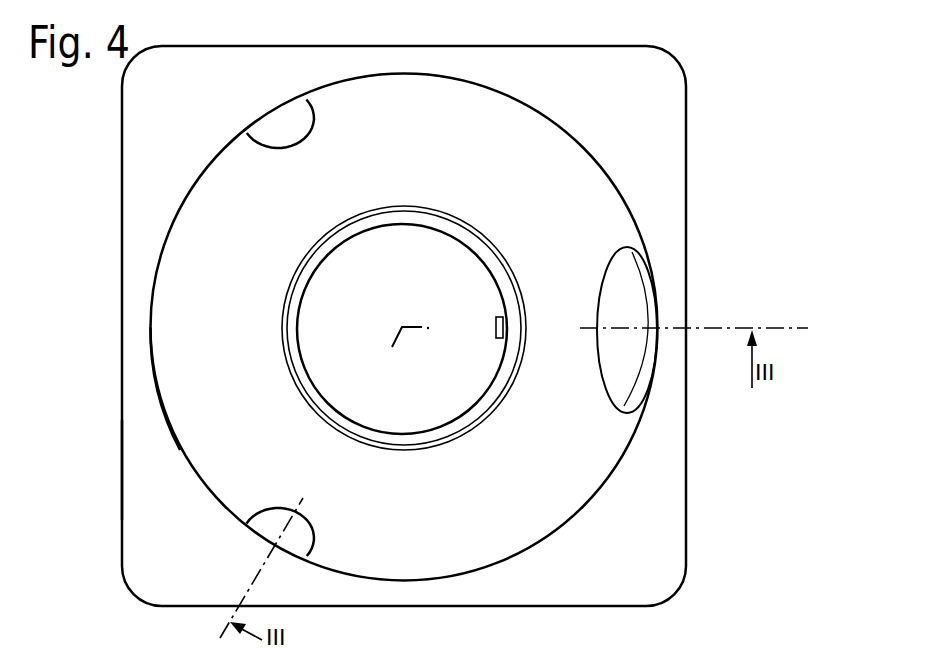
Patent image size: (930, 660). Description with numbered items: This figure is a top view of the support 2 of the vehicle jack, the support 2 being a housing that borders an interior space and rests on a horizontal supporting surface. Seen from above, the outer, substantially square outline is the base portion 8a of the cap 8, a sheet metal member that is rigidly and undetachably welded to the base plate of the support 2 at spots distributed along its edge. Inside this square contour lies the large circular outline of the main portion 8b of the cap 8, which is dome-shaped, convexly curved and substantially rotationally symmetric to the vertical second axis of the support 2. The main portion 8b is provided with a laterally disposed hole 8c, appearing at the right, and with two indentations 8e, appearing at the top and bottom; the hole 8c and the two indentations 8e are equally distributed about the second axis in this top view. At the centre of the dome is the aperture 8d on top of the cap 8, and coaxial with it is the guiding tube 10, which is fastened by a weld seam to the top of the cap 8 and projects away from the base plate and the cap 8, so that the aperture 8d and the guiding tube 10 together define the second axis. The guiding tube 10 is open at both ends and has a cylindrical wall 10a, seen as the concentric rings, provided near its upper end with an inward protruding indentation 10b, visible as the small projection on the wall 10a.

The support 2 is at (114, 119).
The cap 8 is at (197, 193).
The base portion 8a is at (132, 468).
The main portion 8b is at (170, 383).
The hole 8c is at (628, 250).
The aperture 8d is at (480, 272).
The indentations 8e is at (310, 117).
The guiding tube 10 is at (505, 363).
The cylindrical wall 10a is at (482, 400).
The indentation 10b is at (497, 338).